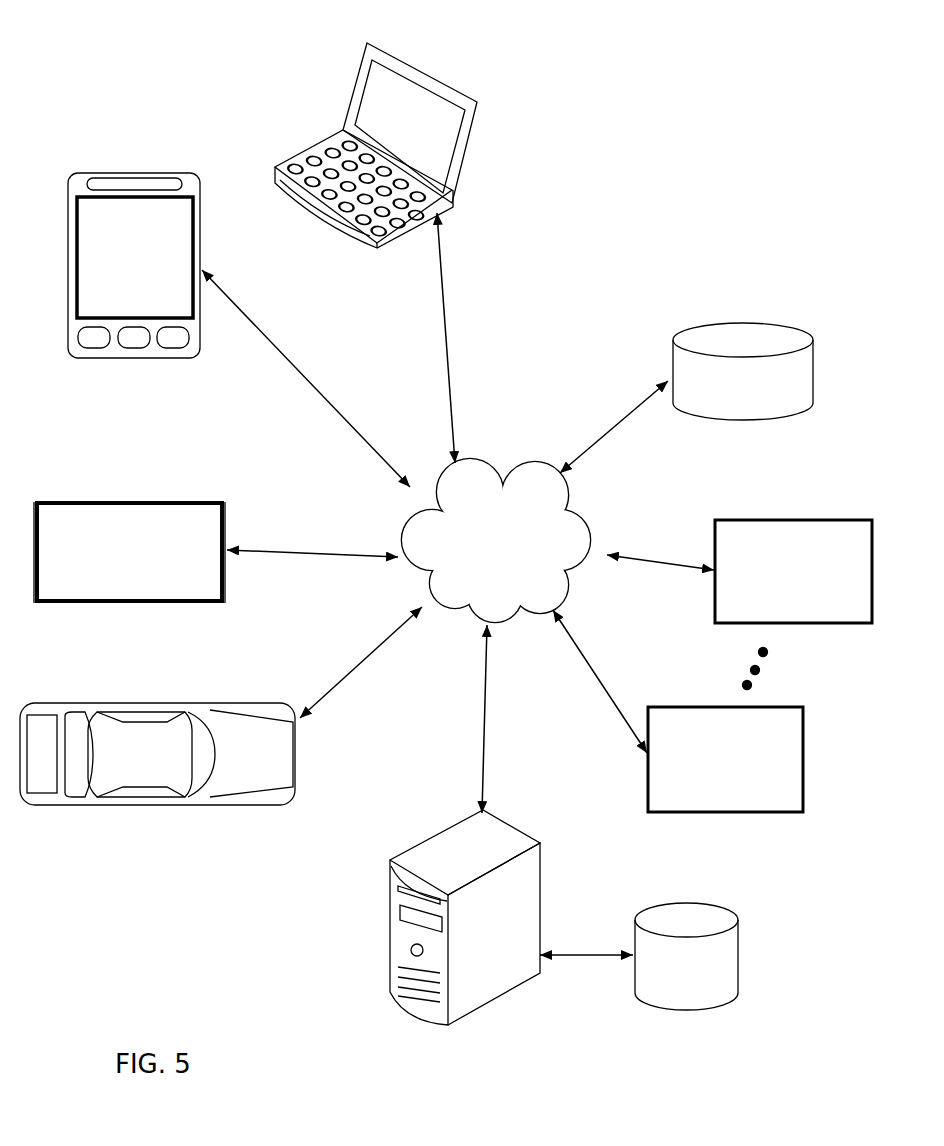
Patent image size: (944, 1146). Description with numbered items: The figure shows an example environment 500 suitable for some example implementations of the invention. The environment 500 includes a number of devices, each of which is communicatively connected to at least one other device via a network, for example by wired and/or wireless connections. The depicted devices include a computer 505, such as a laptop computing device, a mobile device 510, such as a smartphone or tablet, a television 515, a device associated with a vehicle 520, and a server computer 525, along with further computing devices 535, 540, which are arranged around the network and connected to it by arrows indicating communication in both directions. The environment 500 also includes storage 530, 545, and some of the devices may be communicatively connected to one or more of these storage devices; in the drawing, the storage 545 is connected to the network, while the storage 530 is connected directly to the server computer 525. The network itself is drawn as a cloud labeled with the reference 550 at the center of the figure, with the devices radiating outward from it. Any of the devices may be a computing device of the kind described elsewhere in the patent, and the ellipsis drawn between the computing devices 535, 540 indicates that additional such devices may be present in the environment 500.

The environment 500 is at (151, 44).
The computer 505 is at (376, 145).
The mobile device 510 is at (134, 265).
The television 515 is at (129, 552).
The device associated with a vehicle 520 is at (157, 754).
The server computer 525 is at (465, 917).
The storage 530 is at (686, 956).
The computing device 535 is at (725, 759).
The computing device 540 is at (793, 571).
The storage 545 is at (743, 371).
The network 550 is at (496, 540).